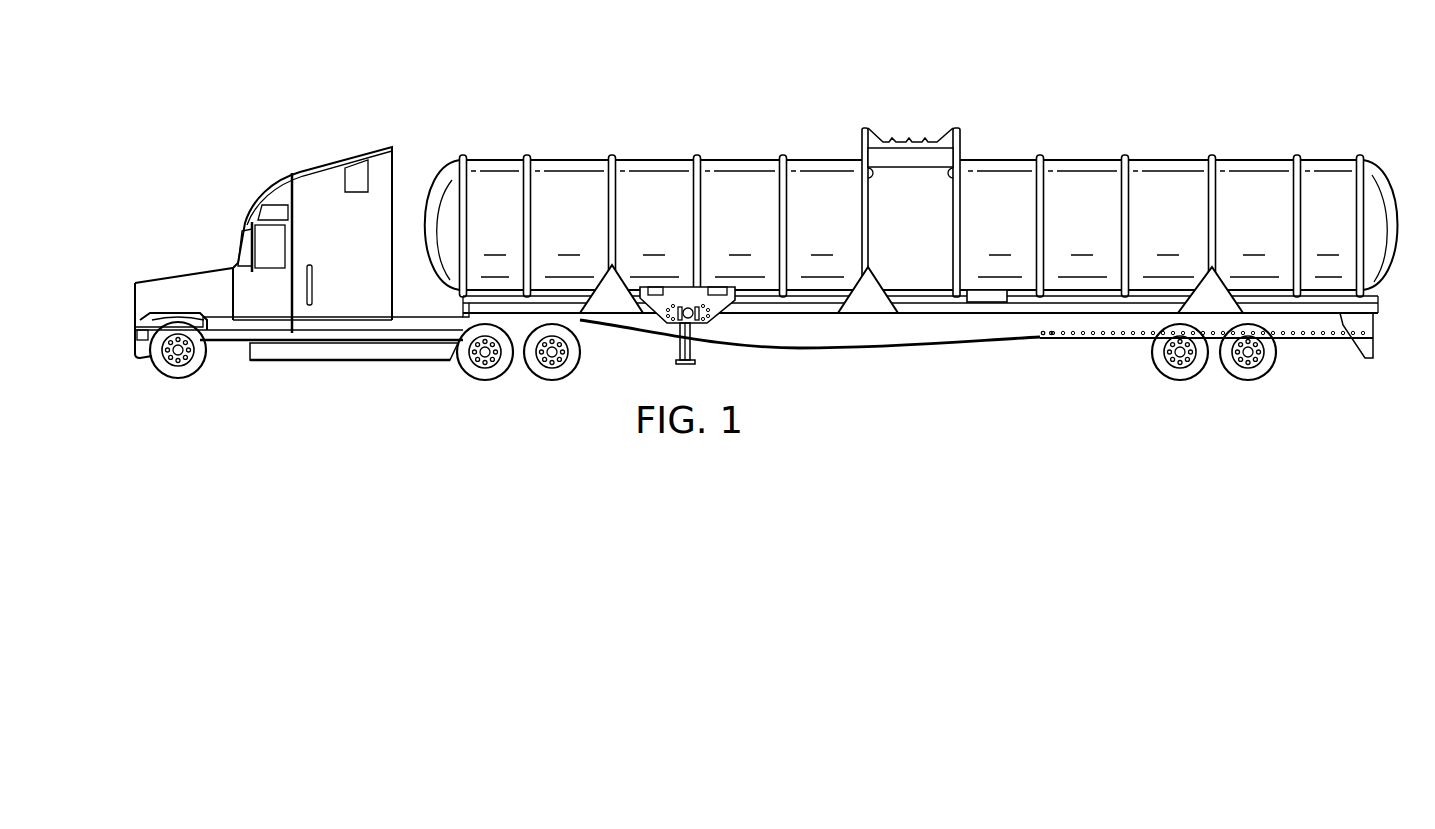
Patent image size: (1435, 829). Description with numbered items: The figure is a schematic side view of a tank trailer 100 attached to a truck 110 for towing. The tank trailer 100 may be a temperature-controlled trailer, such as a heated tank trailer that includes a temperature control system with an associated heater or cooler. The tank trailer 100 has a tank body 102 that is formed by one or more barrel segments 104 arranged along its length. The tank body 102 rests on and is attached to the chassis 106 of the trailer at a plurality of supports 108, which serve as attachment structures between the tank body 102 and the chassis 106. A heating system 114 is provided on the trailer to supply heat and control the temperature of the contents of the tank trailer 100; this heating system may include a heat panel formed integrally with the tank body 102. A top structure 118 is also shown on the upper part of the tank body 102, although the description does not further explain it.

The tank trailer 100 is at (911, 250).
The tank body 102 is at (592, 241).
The barrel segments 104 is at (1083, 167).
The chassis 106 is at (808, 340).
The supports 108 is at (612, 307).
The truck 110 is at (340, 156).
The heating system 114 is at (987, 300).
The top rack 118 is at (948, 158).